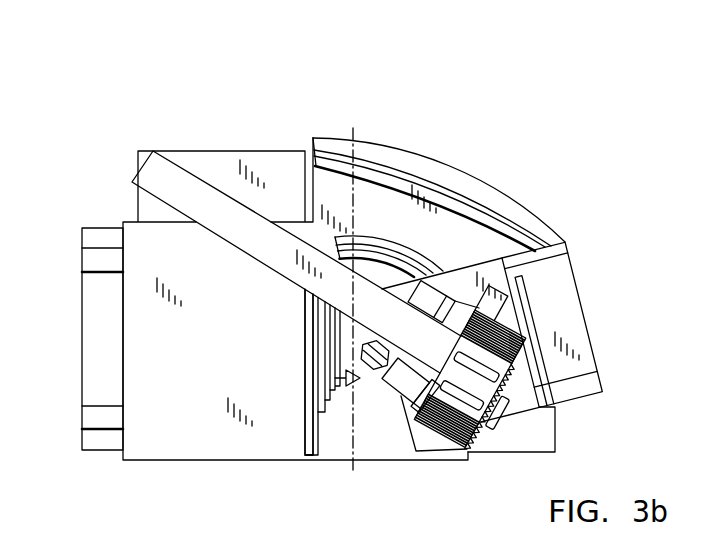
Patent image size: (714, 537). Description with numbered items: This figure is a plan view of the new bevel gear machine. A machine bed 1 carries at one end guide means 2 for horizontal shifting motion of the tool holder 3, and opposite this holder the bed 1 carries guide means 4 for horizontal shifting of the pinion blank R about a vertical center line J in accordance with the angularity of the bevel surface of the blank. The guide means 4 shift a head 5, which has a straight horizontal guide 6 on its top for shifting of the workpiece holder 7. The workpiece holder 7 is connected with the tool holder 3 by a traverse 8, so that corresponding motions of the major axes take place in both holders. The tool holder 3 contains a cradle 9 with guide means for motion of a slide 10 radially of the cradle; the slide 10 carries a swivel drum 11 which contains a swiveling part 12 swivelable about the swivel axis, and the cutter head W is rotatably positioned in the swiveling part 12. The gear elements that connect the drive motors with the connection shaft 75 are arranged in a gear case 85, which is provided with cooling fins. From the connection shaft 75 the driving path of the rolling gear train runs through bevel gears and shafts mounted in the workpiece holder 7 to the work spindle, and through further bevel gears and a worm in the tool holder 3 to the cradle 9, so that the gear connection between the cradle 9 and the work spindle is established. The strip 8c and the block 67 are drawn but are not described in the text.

The machine bed 1 is at (82, 325).
The guide means 2 is at (90, 260).
The tool holder 3 is at (188, 456).
The guide means 4 is at (402, 150).
The head 5 is at (549, 323).
The straight horizontal guide 6 is at (593, 370).
The workpiece holder 7 is at (553, 428).
The traverse 8 is at (222, 232).
The side strip of carriage 8c is at (532, 332).
The cradle 9 is at (305, 296).
The slide 10 is at (313, 330).
The swivel drum 11 is at (318, 352).
The swiveling part 12 is at (328, 374).
The cutter head W is at (312, 398).
The vertical center line J is at (354, 388).
The pinion blank R is at (370, 377).
The slide block 67 is at (440, 296).
The connection shaft 75 is at (402, 389).
The gear case 85 is at (487, 428).